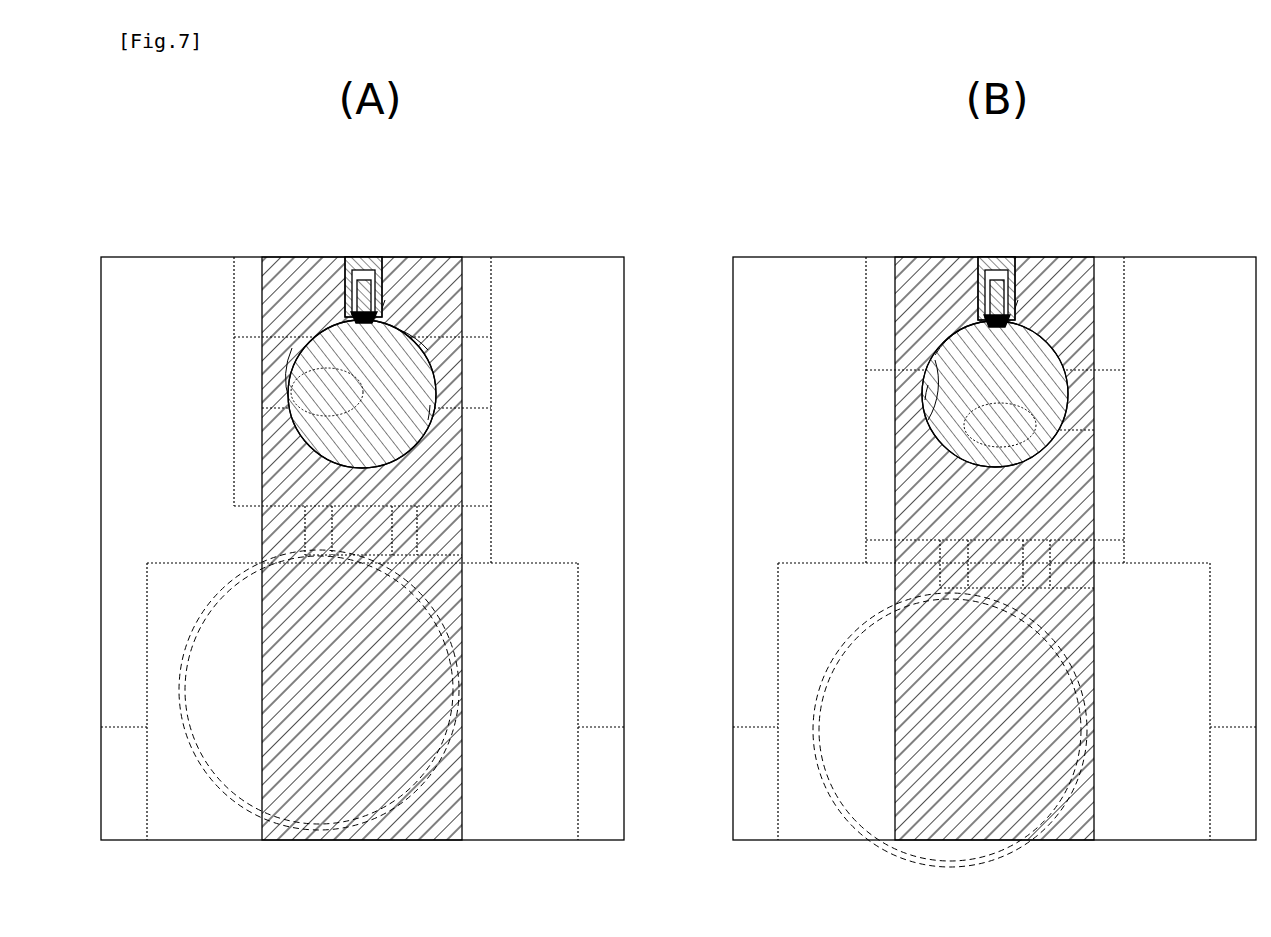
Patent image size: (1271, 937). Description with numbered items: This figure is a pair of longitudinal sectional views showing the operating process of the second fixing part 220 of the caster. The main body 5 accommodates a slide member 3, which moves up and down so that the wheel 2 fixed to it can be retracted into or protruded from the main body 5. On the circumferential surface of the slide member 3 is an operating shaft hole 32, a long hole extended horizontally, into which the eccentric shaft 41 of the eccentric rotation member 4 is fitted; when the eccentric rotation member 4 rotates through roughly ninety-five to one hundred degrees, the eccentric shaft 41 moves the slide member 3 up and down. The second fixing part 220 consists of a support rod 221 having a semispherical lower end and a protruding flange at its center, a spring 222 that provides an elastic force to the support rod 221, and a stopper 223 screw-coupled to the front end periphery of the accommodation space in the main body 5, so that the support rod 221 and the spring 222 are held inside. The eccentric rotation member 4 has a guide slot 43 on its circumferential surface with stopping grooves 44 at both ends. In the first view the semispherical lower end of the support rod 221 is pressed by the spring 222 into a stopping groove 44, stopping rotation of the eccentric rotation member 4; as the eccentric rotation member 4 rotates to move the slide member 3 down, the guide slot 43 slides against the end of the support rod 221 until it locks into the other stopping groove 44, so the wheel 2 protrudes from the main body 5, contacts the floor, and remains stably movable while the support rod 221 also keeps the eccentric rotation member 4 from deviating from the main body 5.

The wheel 2 is at (182, 753).
The slide member 3 is at (489, 440).
The eccentric rotation member 4 is at (298, 427).
The main body 5 is at (721, 519).
The operating shaft hole 32 is at (478, 337).
The eccentric shaft 41 is at (292, 348).
The guide slot 43 is at (428, 337).
The stopping grooves 44 is at (385, 315).
The second fixing part 220 is at (637, 251).
The support rod 221 is at (355, 318).
The spring 222 is at (384, 272).
The stopper 223 is at (344, 262).